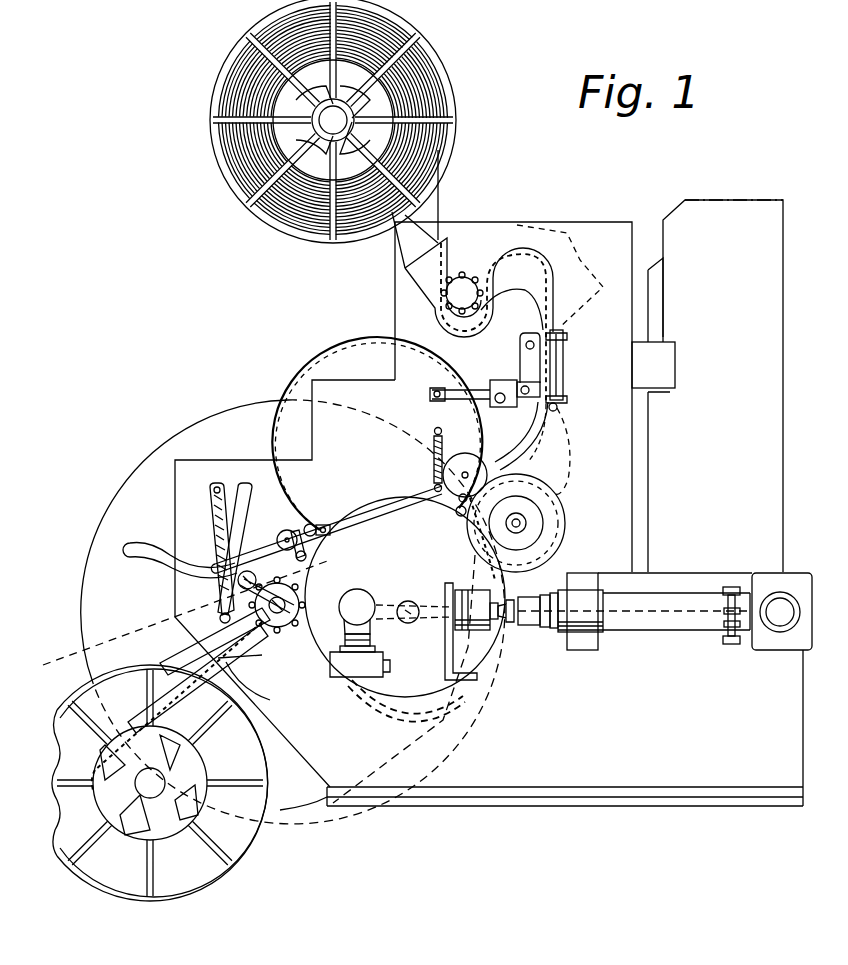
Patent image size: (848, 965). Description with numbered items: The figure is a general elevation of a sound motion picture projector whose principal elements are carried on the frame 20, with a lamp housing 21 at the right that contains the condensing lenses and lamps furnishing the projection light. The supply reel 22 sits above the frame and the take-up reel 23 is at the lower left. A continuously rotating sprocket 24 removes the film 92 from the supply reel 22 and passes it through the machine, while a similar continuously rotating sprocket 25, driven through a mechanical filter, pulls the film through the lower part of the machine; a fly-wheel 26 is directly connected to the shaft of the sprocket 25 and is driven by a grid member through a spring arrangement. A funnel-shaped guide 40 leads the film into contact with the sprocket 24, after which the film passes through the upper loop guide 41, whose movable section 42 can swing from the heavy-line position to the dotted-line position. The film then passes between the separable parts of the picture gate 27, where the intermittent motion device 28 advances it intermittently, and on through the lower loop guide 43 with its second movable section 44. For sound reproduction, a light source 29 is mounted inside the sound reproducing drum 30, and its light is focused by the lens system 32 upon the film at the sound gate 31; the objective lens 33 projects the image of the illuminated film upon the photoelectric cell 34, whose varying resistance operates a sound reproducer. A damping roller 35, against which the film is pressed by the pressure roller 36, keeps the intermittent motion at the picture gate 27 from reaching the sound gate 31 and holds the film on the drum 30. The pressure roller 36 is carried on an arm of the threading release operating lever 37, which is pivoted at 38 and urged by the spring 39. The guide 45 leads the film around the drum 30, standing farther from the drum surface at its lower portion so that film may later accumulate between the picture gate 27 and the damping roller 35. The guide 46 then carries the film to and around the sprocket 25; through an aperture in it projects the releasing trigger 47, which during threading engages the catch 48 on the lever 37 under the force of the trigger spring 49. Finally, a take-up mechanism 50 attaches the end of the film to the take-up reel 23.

The frame 20 is at (397, 340).
The lamp housing 21 is at (707, 386).
The supply reel 22 is at (447, 70).
The take-up reel 23 is at (160, 900).
The continuously rotating sprocket 24 is at (465, 275).
The continuously rotating sprocket 25 is at (275, 633).
The fly-wheel 26 is at (210, 414).
The film gate 27 is at (562, 368).
The intermittent motion device 28 is at (493, 380).
The light source 29 is at (356, 600).
The sound reproducing drum 30 is at (456, 526).
The film gate 31 is at (512, 640).
The lens system 32 is at (481, 634).
The objective lens 33 is at (520, 620).
The photoelectric cell 34 is at (777, 600).
The damping roller 35 is at (566, 523).
The pressure roller 36 is at (467, 456).
The threading release operating lever 37 is at (380, 503).
The pivot 38 is at (458, 501).
The spring 39 is at (433, 446).
The funnel-shaped guide 40 is at (479, 287).
The upper loop guide 41 is at (490, 295).
The movable section 42 is at (558, 270).
The lower loop guide 43 is at (537, 452).
The second movable section 44 is at (566, 452).
The guide 45 is at (478, 690).
The guide 46 is at (270, 585).
The releasing trigger 47 is at (299, 563).
The catch 48 is at (286, 530).
The trigger spring 49 is at (311, 524).
The take-up mechanism 50 is at (168, 668).
The film 92 is at (538, 256).